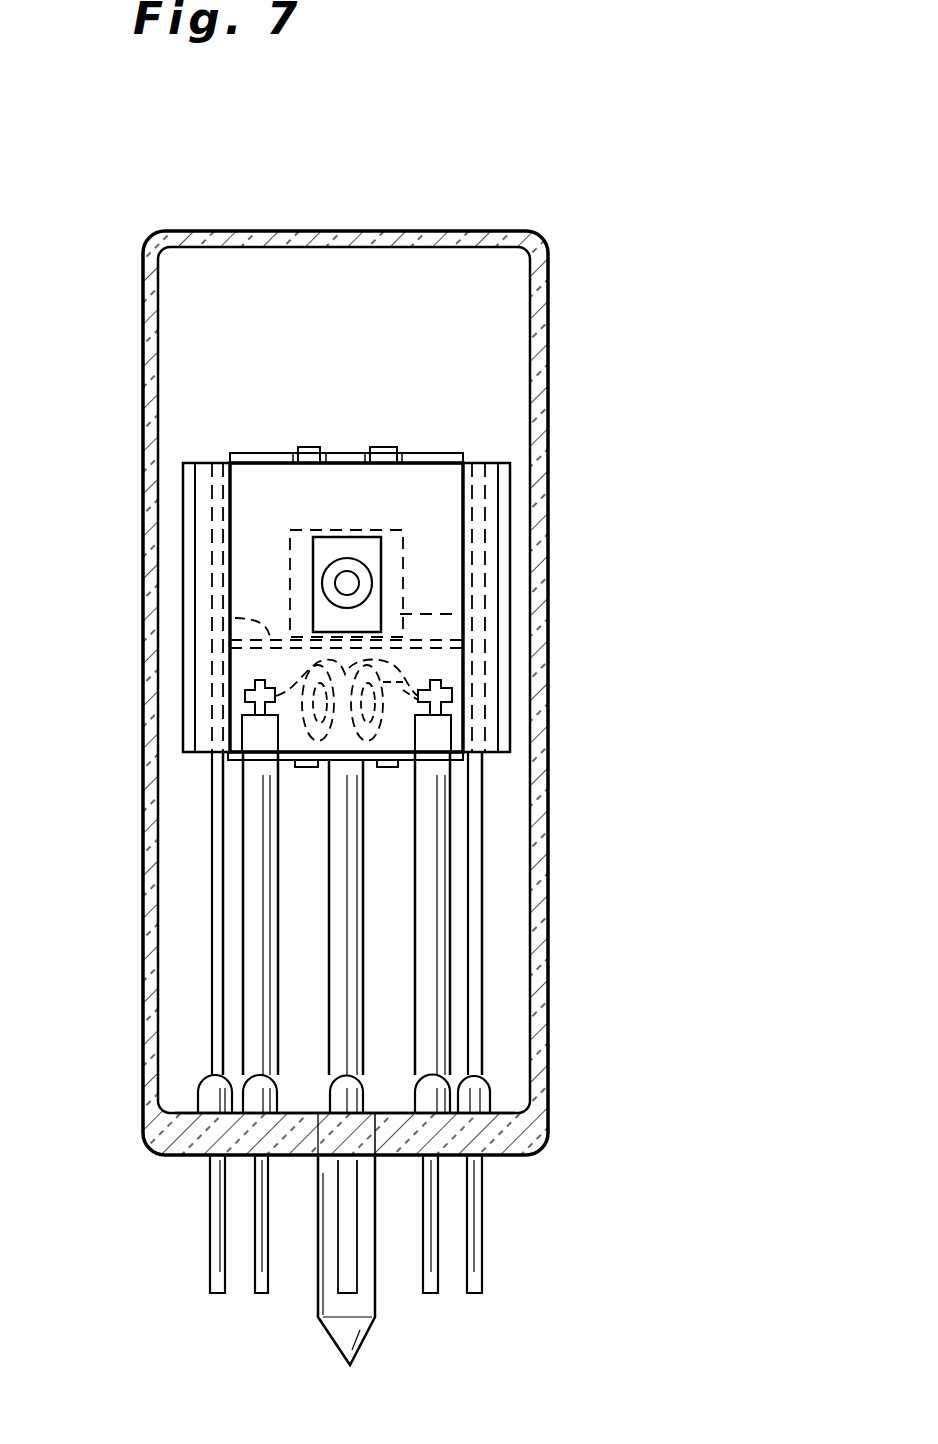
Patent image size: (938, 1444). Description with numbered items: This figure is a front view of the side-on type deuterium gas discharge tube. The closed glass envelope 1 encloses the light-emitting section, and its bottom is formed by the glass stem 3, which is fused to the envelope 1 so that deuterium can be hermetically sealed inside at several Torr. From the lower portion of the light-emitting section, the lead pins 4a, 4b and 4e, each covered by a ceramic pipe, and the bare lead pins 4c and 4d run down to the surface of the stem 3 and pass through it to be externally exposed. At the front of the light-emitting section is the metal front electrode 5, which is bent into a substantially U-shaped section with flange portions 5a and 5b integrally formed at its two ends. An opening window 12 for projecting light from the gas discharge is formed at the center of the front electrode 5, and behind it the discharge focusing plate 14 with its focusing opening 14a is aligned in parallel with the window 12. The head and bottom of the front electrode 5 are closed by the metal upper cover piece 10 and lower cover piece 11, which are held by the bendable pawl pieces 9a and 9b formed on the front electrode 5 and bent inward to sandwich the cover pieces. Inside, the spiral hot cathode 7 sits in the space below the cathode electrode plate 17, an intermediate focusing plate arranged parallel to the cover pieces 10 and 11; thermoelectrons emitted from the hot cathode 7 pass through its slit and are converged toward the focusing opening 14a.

The glass envelope 1 is at (548, 331).
The glass stem 3 is at (505, 1128).
The lead pin 4a is at (265, 958).
The lead pin 4b is at (477, 955).
The bare lead pin 4c is at (210, 880).
The bare lead pin 4d is at (430, 893).
The lead pin 4e is at (347, 833).
The front electrode 5 is at (263, 490).
The flange portion 5a is at (197, 547).
The flange portion 5b is at (488, 488).
The hot cathode 7 is at (380, 661).
The pawl piece 9a is at (383, 447).
The pawl piece 9b is at (388, 767).
The upper cover piece 10 is at (272, 452).
The lower cover piece 11 is at (428, 755).
The opening window 12 is at (372, 552).
The discharge focusing plate 14 is at (455, 614).
The focusing opening 14a is at (352, 585).
The cathode electrode plate 17 is at (235, 618).